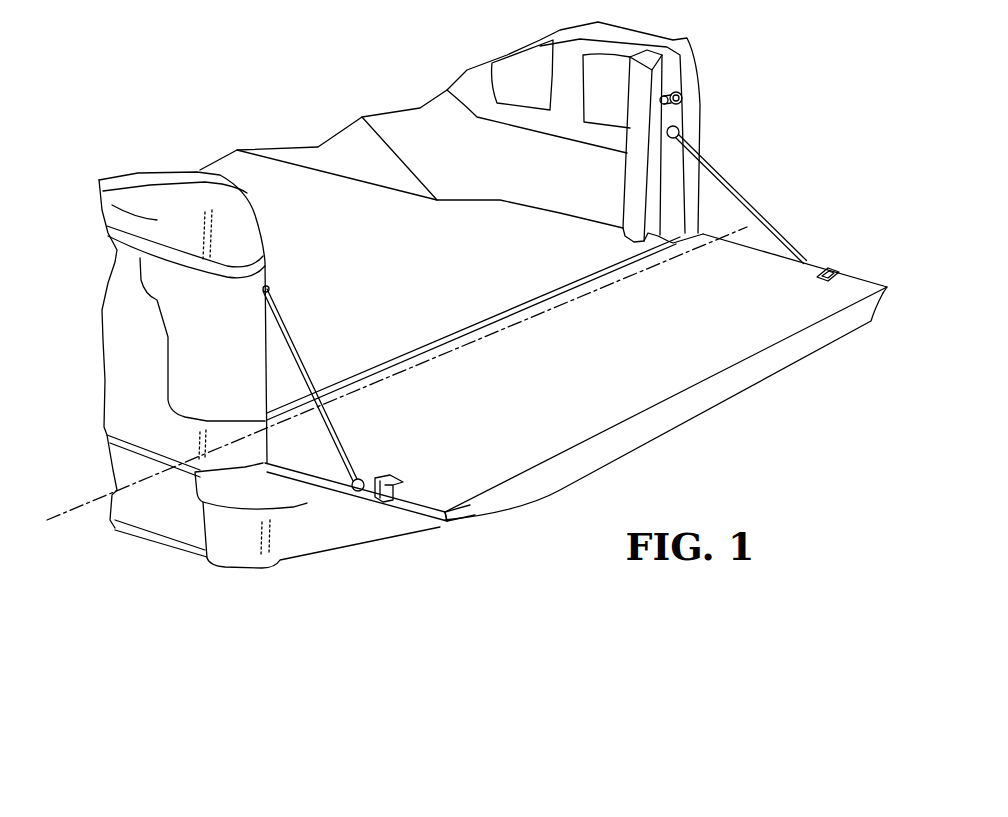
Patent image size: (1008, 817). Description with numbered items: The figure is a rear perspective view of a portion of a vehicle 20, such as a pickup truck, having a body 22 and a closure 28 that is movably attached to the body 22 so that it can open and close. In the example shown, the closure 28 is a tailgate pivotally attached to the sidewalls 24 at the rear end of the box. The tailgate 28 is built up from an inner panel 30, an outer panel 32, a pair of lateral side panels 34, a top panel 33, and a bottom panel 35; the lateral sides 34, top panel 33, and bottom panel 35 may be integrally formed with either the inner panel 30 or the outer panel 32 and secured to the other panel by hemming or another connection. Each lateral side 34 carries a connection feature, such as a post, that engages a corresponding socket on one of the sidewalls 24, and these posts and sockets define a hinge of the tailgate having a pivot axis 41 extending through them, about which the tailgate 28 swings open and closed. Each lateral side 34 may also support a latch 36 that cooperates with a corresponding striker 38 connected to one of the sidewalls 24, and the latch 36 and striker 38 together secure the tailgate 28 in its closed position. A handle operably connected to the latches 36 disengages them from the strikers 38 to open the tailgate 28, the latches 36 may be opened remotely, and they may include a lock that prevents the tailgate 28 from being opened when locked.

The vehicle 20 is at (314, 100).
The body 22 is at (150, 215).
The sidewalls 24 is at (673, 117).
The closure 28 is at (767, 270).
The inner panel 30 is at (585, 376).
The outer panel 32 is at (433, 527).
The top panel 33 is at (683, 413).
The lateral side panels 34 is at (307, 467).
The bottom panel 35 is at (480, 320).
The latch 36 is at (833, 273).
The striker 38 is at (688, 96).
The pivot axis 41 is at (87, 503).